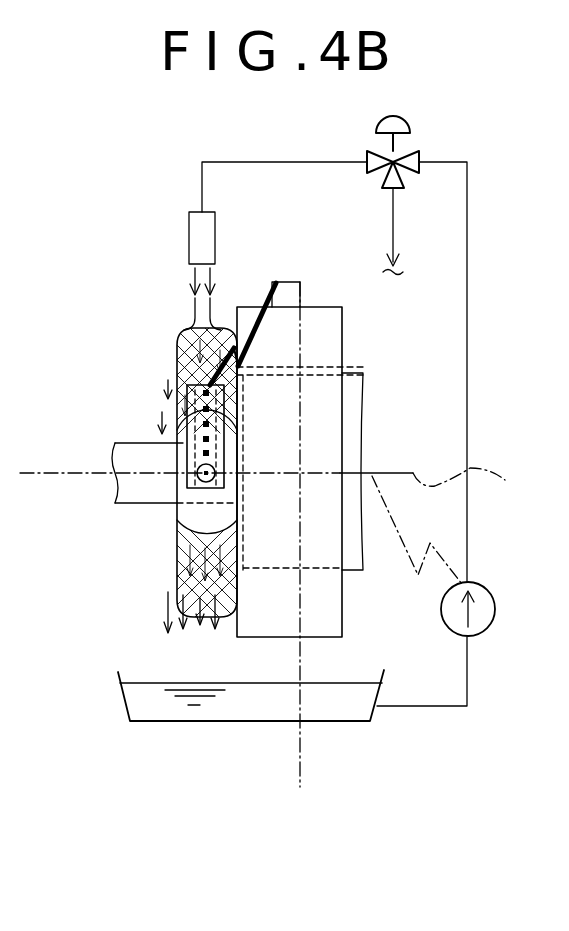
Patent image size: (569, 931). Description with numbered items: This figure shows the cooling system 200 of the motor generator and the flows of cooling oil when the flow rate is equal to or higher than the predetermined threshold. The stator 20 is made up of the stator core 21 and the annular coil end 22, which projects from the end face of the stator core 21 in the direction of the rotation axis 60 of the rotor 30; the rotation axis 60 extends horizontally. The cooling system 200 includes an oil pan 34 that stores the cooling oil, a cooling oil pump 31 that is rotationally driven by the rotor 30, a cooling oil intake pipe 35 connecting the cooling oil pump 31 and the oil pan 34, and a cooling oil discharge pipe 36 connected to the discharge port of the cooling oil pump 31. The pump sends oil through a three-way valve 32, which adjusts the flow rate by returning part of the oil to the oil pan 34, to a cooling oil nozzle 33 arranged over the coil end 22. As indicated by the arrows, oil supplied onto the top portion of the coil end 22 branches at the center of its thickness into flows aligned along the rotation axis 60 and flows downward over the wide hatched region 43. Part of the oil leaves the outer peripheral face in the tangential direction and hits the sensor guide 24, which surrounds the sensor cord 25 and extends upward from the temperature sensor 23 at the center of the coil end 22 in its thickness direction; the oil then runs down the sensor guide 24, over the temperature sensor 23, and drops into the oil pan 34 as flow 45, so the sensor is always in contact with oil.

The stator 20 is at (337, 640).
The stator core 21 is at (236, 637).
The coil end 22 is at (176, 612).
The temperature sensor 23 is at (216, 478).
The sensor guide 24 is at (224, 452).
The sensor cord 25 is at (270, 297).
The rotor 30 is at (117, 508).
The cooling oil pump 31 is at (488, 631).
The three-way valve 32 is at (410, 126).
The cooling oil nozzle 33 is at (215, 226).
The oil pan 34 is at (262, 721).
The cooling oil intake pipe 35 is at (415, 707).
The cooling oil discharge pipe 36 is at (467, 294).
The hatched region 43 is at (178, 352).
The flow 45 is at (164, 414).
The rotation axis 60 is at (284, 526).
The cooling system 200 is at (226, 749).